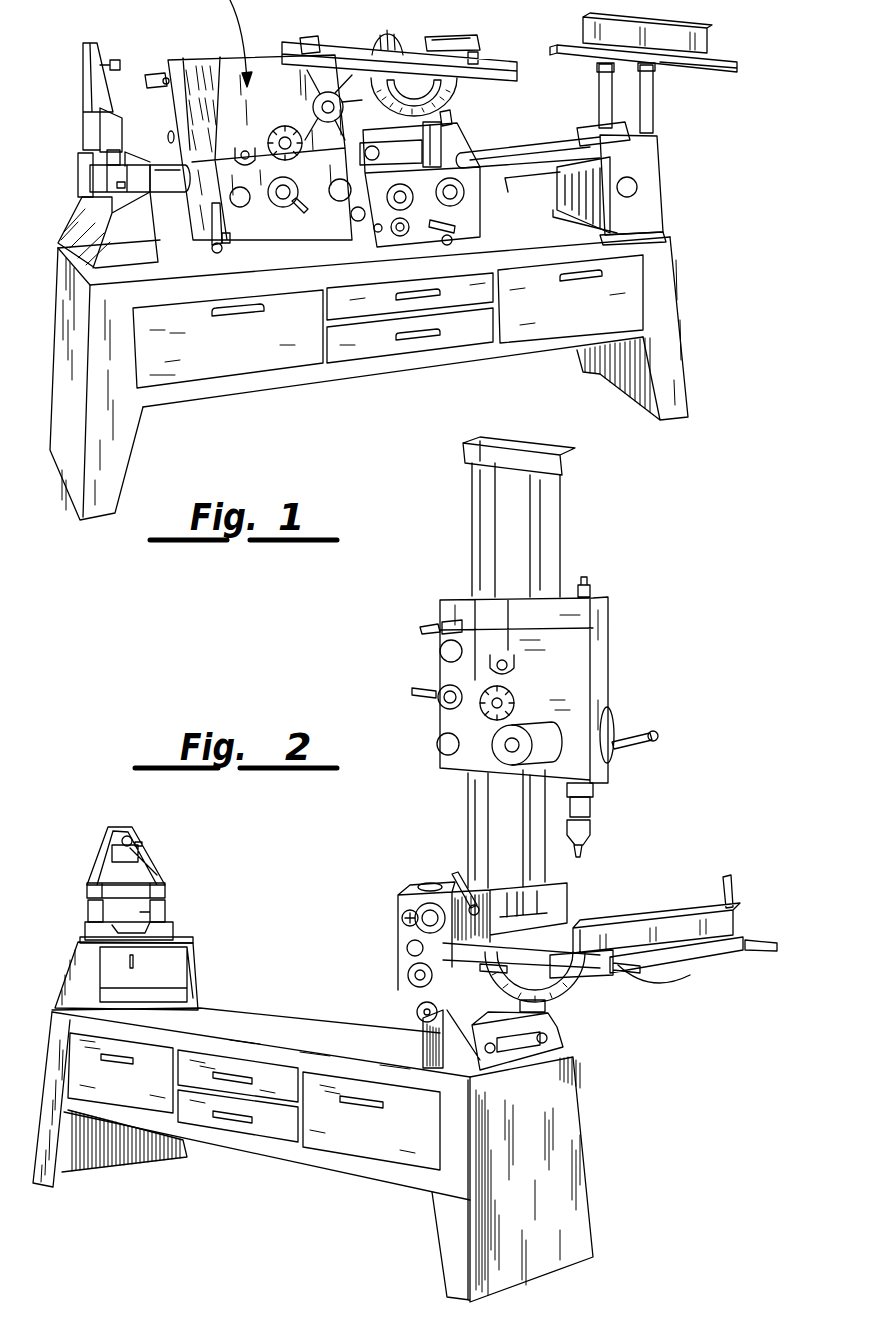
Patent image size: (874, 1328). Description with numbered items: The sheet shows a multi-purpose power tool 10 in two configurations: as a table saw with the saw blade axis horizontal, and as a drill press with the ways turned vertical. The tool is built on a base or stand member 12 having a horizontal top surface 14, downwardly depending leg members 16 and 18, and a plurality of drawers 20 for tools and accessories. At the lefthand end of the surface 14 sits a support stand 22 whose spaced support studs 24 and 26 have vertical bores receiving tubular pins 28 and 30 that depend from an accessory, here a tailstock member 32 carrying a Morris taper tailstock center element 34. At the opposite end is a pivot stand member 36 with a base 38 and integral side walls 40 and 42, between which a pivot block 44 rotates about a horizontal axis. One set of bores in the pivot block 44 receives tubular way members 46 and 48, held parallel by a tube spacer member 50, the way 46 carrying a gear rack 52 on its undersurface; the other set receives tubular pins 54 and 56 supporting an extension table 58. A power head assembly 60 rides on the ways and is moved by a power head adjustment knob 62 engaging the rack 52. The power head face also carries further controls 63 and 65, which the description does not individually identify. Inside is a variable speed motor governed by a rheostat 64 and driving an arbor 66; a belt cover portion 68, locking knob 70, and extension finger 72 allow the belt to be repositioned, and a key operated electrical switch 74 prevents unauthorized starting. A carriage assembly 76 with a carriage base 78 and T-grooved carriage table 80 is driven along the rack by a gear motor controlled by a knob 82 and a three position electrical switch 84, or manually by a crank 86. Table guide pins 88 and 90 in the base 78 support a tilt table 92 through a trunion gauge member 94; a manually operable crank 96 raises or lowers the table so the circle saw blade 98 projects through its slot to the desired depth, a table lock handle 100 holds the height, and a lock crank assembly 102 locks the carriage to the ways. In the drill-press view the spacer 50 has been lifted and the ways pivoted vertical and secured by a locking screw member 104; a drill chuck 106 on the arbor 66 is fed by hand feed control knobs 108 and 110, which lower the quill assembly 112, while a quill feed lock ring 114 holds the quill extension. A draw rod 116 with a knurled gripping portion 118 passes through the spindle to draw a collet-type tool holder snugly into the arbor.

In FIG. 1, the multi-purpose power tool 10 is at (698, 222).
In FIG. 1, the base or stand member 12 is at (382, 365).
In FIG. 2, the base or stand member 12 is at (262, 1147).
In FIG. 1, the top surface 14 is at (552, 240).
In FIG. 2, the top surface 14 is at (240, 1020).
In FIG. 1, the leg member 16 is at (113, 468).
In FIG. 2, the leg member 16 is at (60, 1155).
In FIG. 1, the leg member 18 is at (670, 387).
In FIG. 2, the leg member 18 is at (437, 1253).
In FIG. 1, the drawers 20 is at (250, 358).
In FIG. 2, the drawers 20 is at (128, 1099).
In FIG. 1, the support stand 22 is at (144, 249).
In FIG. 2, the support stand 22 is at (68, 976).
In FIG. 1, the support stud 24 is at (88, 173).
In FIG. 2, the support stud 24 is at (160, 921).
In FIG. 1, the support stud 26 is at (107, 198).
In FIG. 2, the support stud 26 is at (86, 925).
In FIG. 1, the tubular pin 28 is at (88, 135).
In FIG. 2, the tubular pin 28 is at (163, 903).
In FIG. 1, the tubular pin 30 is at (105, 153).
In FIG. 2, the tubular pin 30 is at (88, 905).
In FIG. 1, the tailstock member 32 is at (87, 80).
In FIG. 2, the tailstock member 32 is at (107, 838).
In FIG. 1, the tailstock center element 34 is at (115, 58).
In FIG. 1, the pivot stand member 36 is at (668, 209).
In FIG. 1, the base 38 is at (550, 217).
In FIG. 1, the side wall 40 is at (640, 190).
In FIG. 1, the side wall 42 is at (557, 183).
In FIG. 1, the pivot block 44 is at (650, 150).
In FIG. 1, the tubular way member 46 is at (550, 142).
In FIG. 2, the tubular way member 46 is at (472, 521).
In FIG. 1, the tubular way member 48 is at (577, 130).
In FIG. 2, the tubular way member 48 is at (562, 520).
In FIG. 1, the tube spacer member 50 is at (128, 160).
In FIG. 2, the tube spacer member 50 is at (522, 452).
In FIG. 1, the gear rack 52 is at (508, 188).
In FIG. 1, the tubular pin 54 is at (652, 118).
In FIG. 1, the tubular pin 56 is at (611, 108).
In FIG. 1, the extension table 58 is at (580, 45).
In FIG. 1, the power head assembly 60 is at (265, 120).
In FIG. 2, the power head assembly 60 is at (618, 651).
In FIG. 1, the power head adjustment knob 62 is at (243, 207).
In FIG. 2, the power head adjustment knob 62 is at (441, 652).
In FIG. 1, the feed knob 63 is at (275, 205).
In FIG. 2, the feed knob 63 is at (439, 701).
In FIG. 1, the rheostat 64 is at (278, 130).
In FIG. 2, the rheostat 64 is at (505, 690).
In FIG. 1, the control knob 65 is at (338, 202).
In FIG. 2, the control knob 65 is at (437, 745).
In FIG. 2, the arbor 66 is at (592, 806).
In FIG. 1, the belt cover portion 68 is at (211, 120).
In FIG. 1, the locking knob 70 is at (211, 249).
In FIG. 2, the locking knob 70 is at (425, 622).
In FIG. 1, the extension finger 72 is at (228, 244).
In FIG. 2, the extension finger 72 is at (440, 634).
In FIG. 1, the key operated electrical switch 74 is at (243, 150).
In FIG. 2, the key operated electrical switch 74 is at (514, 660).
In FIG. 1, the carriage assembly 76 is at (447, 168).
In FIG. 2, the carriage assembly 76 is at (392, 897).
In FIG. 1, the carriage base 78 is at (449, 245).
In FIG. 1, the carriage table 80 is at (391, 153).
In FIG. 1, the knob 82 is at (378, 232).
In FIG. 2, the knob 82 is at (430, 883).
In FIG. 1, the three position electrical switch 84 is at (403, 213).
In FIG. 2, the three position electrical switch 84 is at (402, 917).
In FIG. 1, the manual crank 86 is at (393, 237).
In FIG. 2, the manual crank 86 is at (425, 903).
In FIG. 1, the table guide pin 88 is at (448, 124).
In FIG. 1, the table guide pin 90 is at (363, 77).
In FIG. 1, the tilt table 92 is at (318, 45).
In FIG. 2, the tilt table 92 is at (575, 930).
In FIG. 1, the trunion gauge member 94 is at (463, 88).
In FIG. 2, the trunion gauge member 94 is at (565, 992).
In FIG. 1, the manually operable crank 96 is at (462, 188).
In FIG. 2, the manually operable crank 96 is at (408, 977).
In FIG. 1, the circle saw blade 98 is at (388, 28).
In FIG. 1, the table lock handle 100 is at (458, 230).
In FIG. 2, the table lock handle 100 is at (407, 950).
In FIG. 1, the lock crank assembly 102 is at (358, 221).
In FIG. 2, the lock crank assembly 102 is at (478, 900).
In FIG. 2, the locking screw member 104 is at (416, 1012).
In FIG. 2, the drill chuck 106 is at (595, 838).
In FIG. 2, the hand feed control knob 108 is at (612, 727).
In FIG. 2, the hand feed control knob 110 is at (505, 750).
In FIG. 2, the quill assembly 112 is at (597, 790).
In FIG. 2, the quill feed lock ring 114 is at (538, 728).
In FIG. 1, the draw rod 116 is at (143, 76).
In FIG. 1, the knurled gripping portion 118 is at (163, 80).